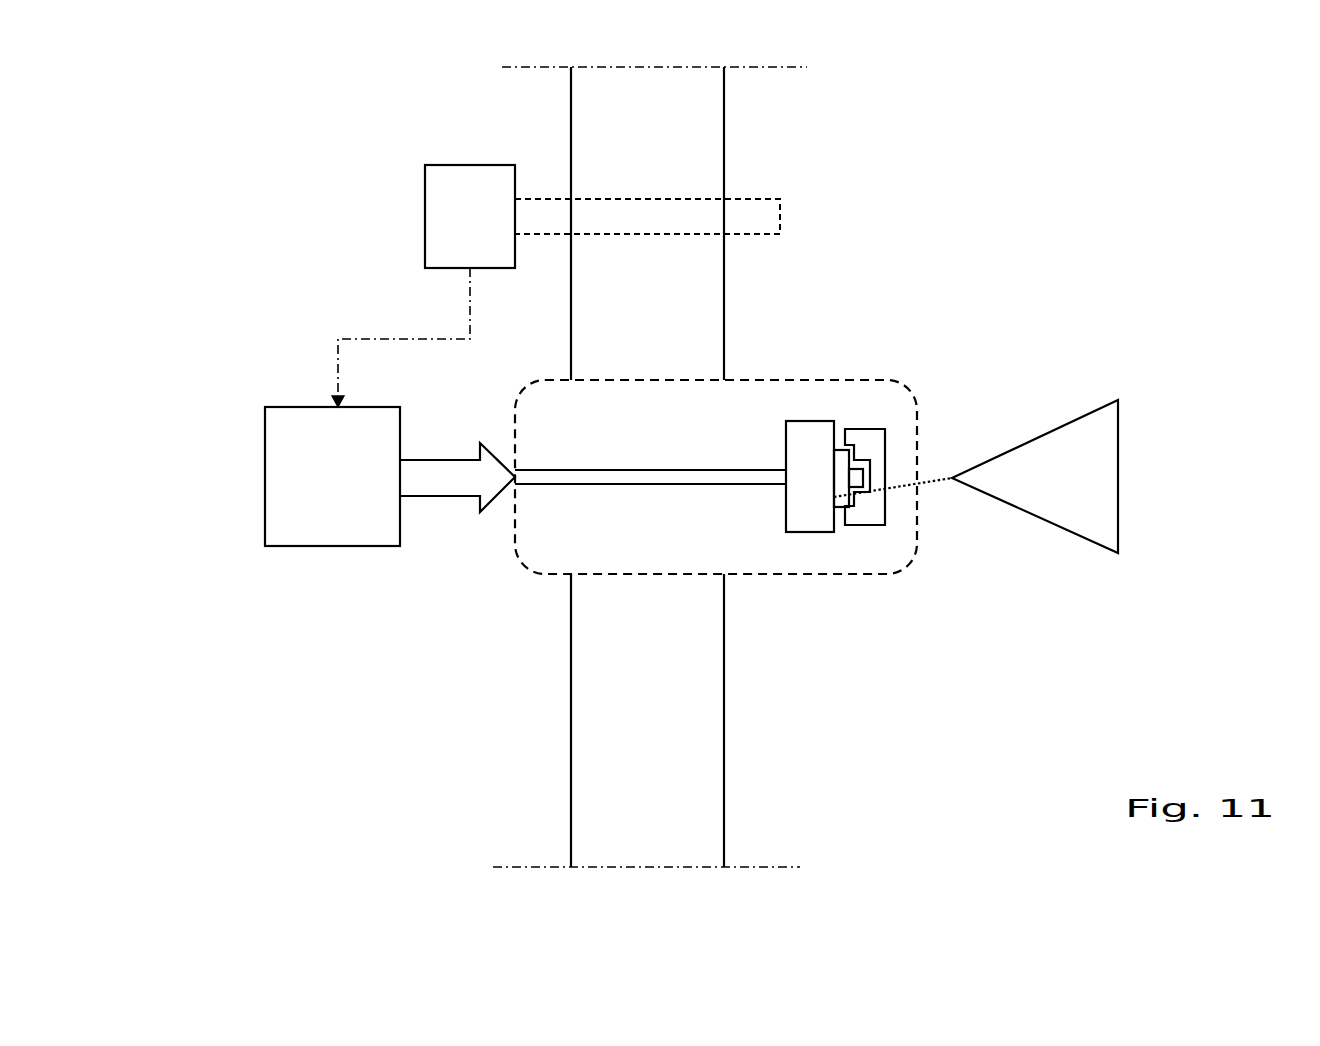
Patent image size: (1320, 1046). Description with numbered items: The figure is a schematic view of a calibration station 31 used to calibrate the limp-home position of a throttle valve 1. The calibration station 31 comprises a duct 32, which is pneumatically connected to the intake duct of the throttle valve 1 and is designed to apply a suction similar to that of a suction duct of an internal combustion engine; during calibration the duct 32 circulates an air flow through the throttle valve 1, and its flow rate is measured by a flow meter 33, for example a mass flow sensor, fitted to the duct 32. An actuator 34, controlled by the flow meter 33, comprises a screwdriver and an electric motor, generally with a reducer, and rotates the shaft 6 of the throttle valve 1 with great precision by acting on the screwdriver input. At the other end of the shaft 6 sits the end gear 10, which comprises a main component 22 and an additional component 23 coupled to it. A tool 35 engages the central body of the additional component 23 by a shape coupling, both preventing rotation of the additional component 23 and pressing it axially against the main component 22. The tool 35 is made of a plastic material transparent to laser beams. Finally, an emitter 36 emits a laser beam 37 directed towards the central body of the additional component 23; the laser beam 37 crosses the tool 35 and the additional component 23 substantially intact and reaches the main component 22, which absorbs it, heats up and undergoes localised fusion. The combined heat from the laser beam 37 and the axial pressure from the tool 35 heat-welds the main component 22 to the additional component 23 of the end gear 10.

The throttle valve 1 is at (794, 628).
The shaft 6 is at (558, 477).
The end gear 10 is at (836, 558).
The main component 22 is at (800, 470).
The additional component 23 is at (843, 469).
The calibration station 31 is at (245, 116).
The duct 32 is at (724, 109).
The flow meter 33 is at (556, 286).
The actuator 34 is at (390, 476).
The tool 35 is at (870, 440).
The emitter 36 is at (1035, 476).
The laser beam 37 is at (939, 482).